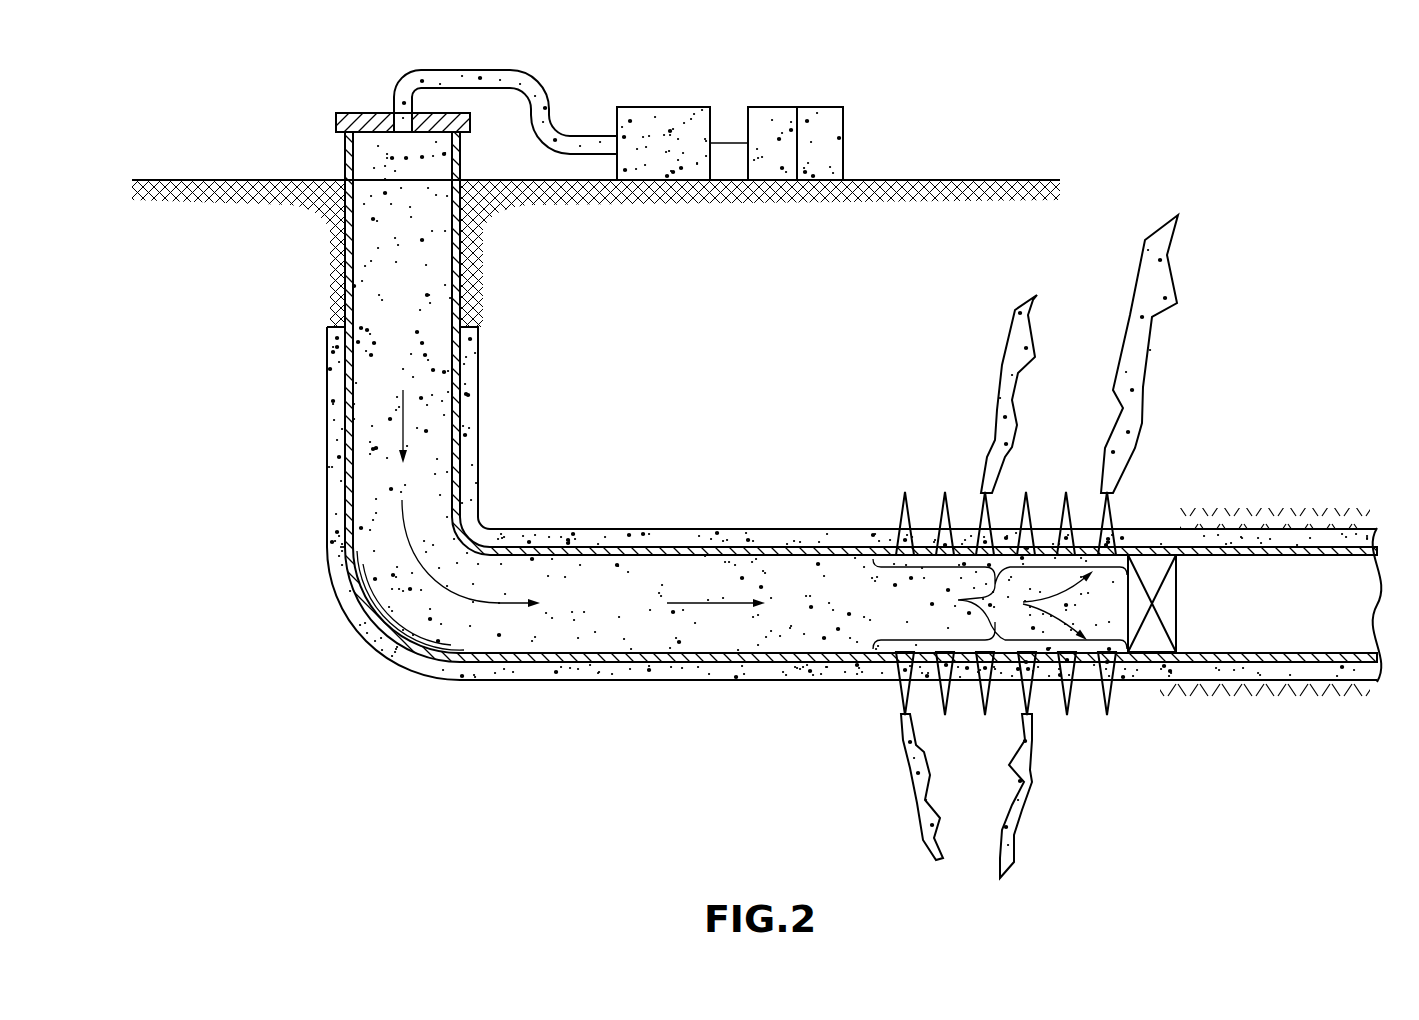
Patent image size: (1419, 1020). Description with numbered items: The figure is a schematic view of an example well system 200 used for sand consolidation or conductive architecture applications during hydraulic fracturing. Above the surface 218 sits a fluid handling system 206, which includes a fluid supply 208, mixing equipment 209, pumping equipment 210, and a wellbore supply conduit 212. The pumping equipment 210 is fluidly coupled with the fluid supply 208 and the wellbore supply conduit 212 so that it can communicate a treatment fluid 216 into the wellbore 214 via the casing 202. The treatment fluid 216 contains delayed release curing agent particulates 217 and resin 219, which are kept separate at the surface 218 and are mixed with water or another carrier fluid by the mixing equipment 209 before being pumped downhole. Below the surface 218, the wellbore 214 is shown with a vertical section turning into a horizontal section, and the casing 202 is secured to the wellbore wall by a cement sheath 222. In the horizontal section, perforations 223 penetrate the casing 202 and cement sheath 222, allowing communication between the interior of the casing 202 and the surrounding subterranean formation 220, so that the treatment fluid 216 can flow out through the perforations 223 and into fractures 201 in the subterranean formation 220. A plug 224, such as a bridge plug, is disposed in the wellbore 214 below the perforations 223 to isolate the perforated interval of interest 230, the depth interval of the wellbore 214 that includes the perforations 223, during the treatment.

The well system 200 is at (195, 93).
The fractures 201 is at (1015, 323).
The casing 202 is at (775, 541).
The fluid handling system 206 is at (813, 74).
The fluid supply 208 is at (823, 107).
The mixing equipment 209 is at (762, 107).
The pumping equipment 210 is at (683, 107).
The wellbore supply conduit 212 is at (505, 70).
The wellbore 214 is at (480, 470).
The treatment fluid 216 is at (410, 413).
The delayed release curing agent particulates 217 is at (676, 578).
The surface 218 is at (965, 180).
The resin 219 is at (371, 355).
The subterranean formation 220 is at (583, 257).
The cement sheath 222 is at (830, 530).
The perforations 223 is at (946, 502).
The plug 224 is at (1178, 572).
The perforated interval of interest 230 is at (958, 600).